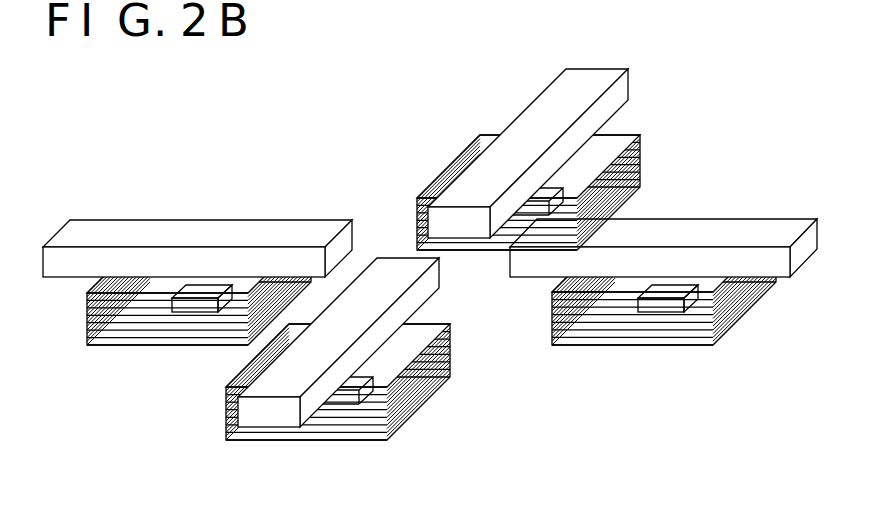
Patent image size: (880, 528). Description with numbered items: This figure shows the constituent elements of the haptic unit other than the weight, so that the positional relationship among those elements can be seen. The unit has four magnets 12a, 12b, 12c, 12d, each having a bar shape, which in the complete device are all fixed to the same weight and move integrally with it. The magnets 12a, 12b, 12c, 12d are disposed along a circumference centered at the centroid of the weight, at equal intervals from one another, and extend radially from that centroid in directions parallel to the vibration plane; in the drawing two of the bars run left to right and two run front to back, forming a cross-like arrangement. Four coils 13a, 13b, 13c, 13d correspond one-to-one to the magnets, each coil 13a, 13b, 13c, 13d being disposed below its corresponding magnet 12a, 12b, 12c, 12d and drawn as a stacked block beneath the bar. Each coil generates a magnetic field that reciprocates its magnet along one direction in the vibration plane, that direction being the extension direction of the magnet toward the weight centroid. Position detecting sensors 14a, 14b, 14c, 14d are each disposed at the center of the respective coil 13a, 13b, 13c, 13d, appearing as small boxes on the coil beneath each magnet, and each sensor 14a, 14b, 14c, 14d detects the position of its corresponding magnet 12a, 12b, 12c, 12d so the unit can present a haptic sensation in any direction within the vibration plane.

The magnet 12a is at (802, 253).
The magnet 12b is at (265, 413).
The magnet 12c is at (88, 233).
The magnet 12d is at (588, 76).
The coil 13a is at (743, 322).
The coil 13b is at (408, 420).
The coil 13c is at (128, 346).
The coil 13d is at (645, 160).
The position detecting sensor 14a is at (669, 288).
The position detecting sensor 14b is at (352, 383).
The position detecting sensor 14c is at (201, 293).
The position detecting sensor 14d is at (547, 193).